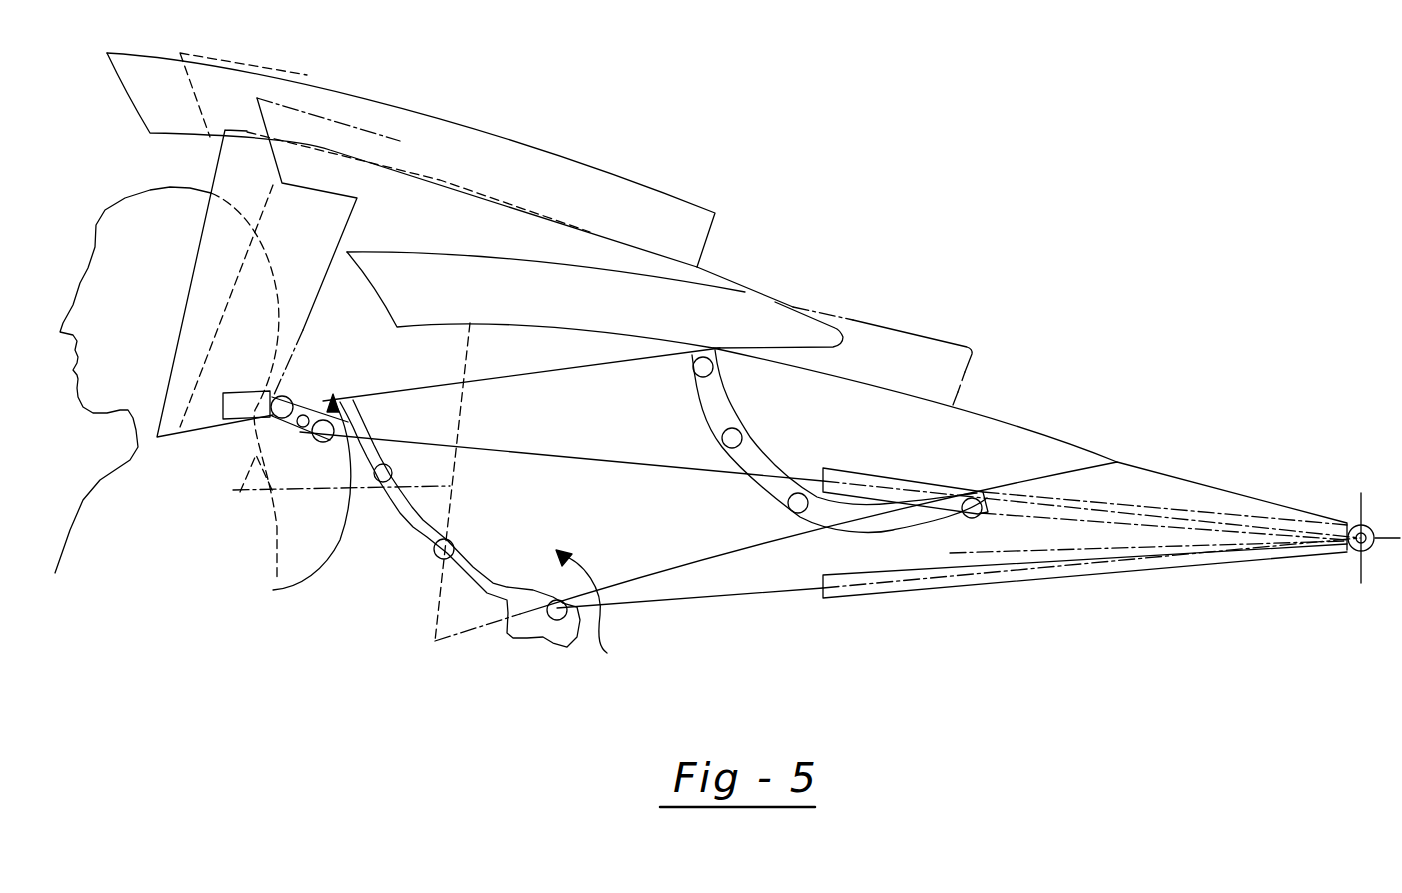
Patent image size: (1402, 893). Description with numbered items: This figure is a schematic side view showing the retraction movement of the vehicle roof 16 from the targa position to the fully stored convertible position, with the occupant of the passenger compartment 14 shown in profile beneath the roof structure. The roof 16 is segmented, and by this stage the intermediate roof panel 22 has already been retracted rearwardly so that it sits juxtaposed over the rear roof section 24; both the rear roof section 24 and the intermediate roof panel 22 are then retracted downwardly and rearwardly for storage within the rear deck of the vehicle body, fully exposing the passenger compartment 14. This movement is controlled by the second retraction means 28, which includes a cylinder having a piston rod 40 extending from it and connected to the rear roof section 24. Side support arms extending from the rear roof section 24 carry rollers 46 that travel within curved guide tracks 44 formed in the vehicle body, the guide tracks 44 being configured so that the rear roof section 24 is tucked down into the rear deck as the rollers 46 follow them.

The passenger compartment 14 is at (77, 201).
The vehicle roof 16 is at (775, 295).
The intermediate roof panel 22 is at (374, 95).
The rear roof section 24 is at (437, 531).
The second retraction means 28 is at (1092, 576).
The piston rod 40 is at (687, 470).
The guide tracks 44 is at (727, 403).
The rollers 46 is at (333, 393).